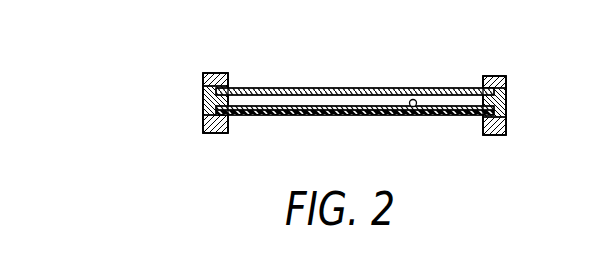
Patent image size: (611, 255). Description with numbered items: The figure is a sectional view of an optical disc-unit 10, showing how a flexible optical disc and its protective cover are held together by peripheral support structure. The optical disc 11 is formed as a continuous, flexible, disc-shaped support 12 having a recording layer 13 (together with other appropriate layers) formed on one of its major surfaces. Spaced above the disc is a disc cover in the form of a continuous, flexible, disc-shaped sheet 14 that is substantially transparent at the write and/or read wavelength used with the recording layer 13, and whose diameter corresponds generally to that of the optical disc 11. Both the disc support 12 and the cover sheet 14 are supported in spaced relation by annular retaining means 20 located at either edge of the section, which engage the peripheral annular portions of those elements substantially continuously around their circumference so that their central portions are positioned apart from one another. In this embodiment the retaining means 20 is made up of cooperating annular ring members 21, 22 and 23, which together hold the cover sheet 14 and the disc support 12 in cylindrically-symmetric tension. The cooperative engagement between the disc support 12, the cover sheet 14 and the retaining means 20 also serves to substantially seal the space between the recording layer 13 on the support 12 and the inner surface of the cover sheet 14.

The optical disc-unit 10 is at (426, 69).
The optical disc 11 is at (311, 119).
The disc-shaped support 12 is at (368, 117).
The recording layer 13 is at (412, 117).
The disc cover sheet 14 is at (266, 88).
The annular retaining means 20 is at (170, 100).
The annular ring member 21 is at (208, 133).
The annular ring member 22 is at (203, 102).
The annular ring member 23 is at (206, 73).